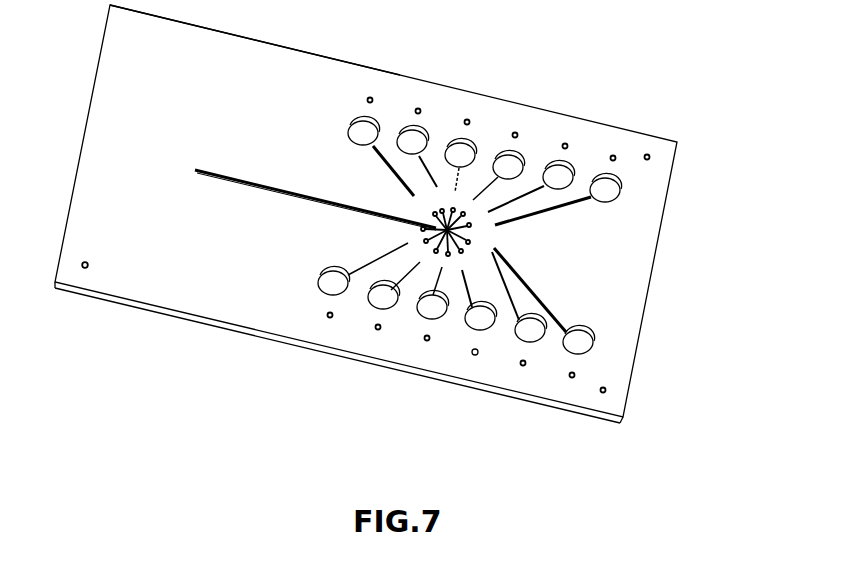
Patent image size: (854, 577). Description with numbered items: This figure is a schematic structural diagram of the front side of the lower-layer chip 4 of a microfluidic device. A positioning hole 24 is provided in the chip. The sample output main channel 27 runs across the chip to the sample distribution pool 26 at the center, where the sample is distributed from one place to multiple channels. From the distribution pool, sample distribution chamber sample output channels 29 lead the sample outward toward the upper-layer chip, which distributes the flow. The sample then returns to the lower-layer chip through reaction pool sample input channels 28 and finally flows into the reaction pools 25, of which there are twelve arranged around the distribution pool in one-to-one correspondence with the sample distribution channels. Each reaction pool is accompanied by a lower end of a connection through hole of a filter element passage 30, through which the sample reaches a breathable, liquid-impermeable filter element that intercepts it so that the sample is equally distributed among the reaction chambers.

The lower-layer chip 4 is at (613, 300).
The positioning hole 24 is at (131, 30).
The reaction pool 25 is at (578, 342).
The sample distribution pool 26 is at (455, 230).
The sample output main channel 27 is at (228, 178).
The reaction pool sample input channel 28 is at (356, 273).
The sample distribution chamber sample output channel 29 is at (427, 250).
The lower end of a connection through hole of a filter element passage 30 is at (475, 355).